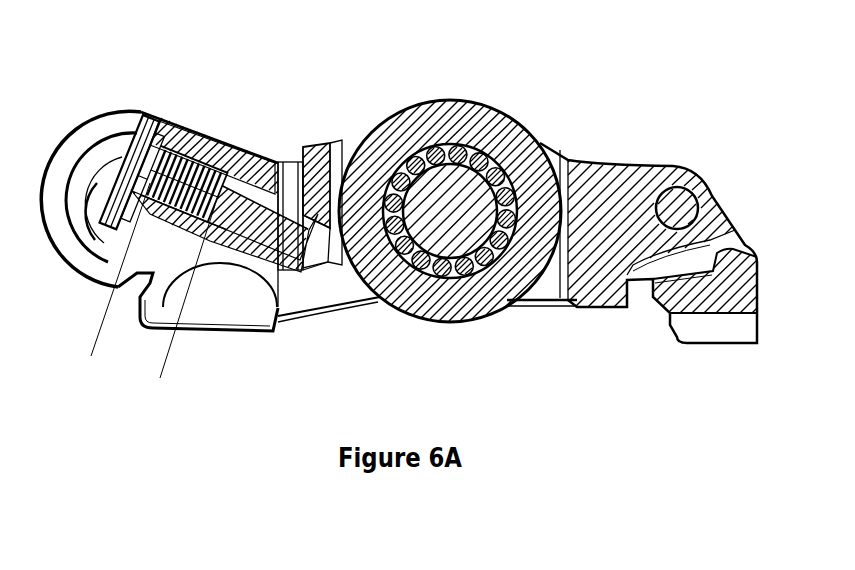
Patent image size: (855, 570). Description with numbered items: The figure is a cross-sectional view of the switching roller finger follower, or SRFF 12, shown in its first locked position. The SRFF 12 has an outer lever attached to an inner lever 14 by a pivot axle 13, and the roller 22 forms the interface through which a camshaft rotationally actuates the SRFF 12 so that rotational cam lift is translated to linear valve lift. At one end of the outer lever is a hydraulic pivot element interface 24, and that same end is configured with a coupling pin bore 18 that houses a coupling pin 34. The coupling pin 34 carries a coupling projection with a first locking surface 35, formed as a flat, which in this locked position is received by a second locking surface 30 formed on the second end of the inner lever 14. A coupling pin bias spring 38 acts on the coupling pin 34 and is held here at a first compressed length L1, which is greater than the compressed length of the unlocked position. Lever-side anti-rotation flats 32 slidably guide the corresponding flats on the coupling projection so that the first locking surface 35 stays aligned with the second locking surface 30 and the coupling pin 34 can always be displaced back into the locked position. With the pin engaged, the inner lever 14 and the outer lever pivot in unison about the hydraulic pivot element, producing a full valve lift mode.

The SRFF 12 is at (668, 122).
The pivot axle 13 is at (681, 205).
The inner lever 14 is at (590, 162).
The coupling pin bore 18 is at (250, 165).
The roller 22 is at (462, 101).
The hydraulic pivot element interface 24 is at (236, 293).
The second locking surface 30 is at (330, 262).
The lever-side anti-rotation flat 32 is at (306, 150).
The coupling pin 34 is at (303, 280).
The first locking surface 35 is at (295, 162).
The coupling pin bias spring 38 is at (200, 135).
The first compressed length L1 is at (158, 373).